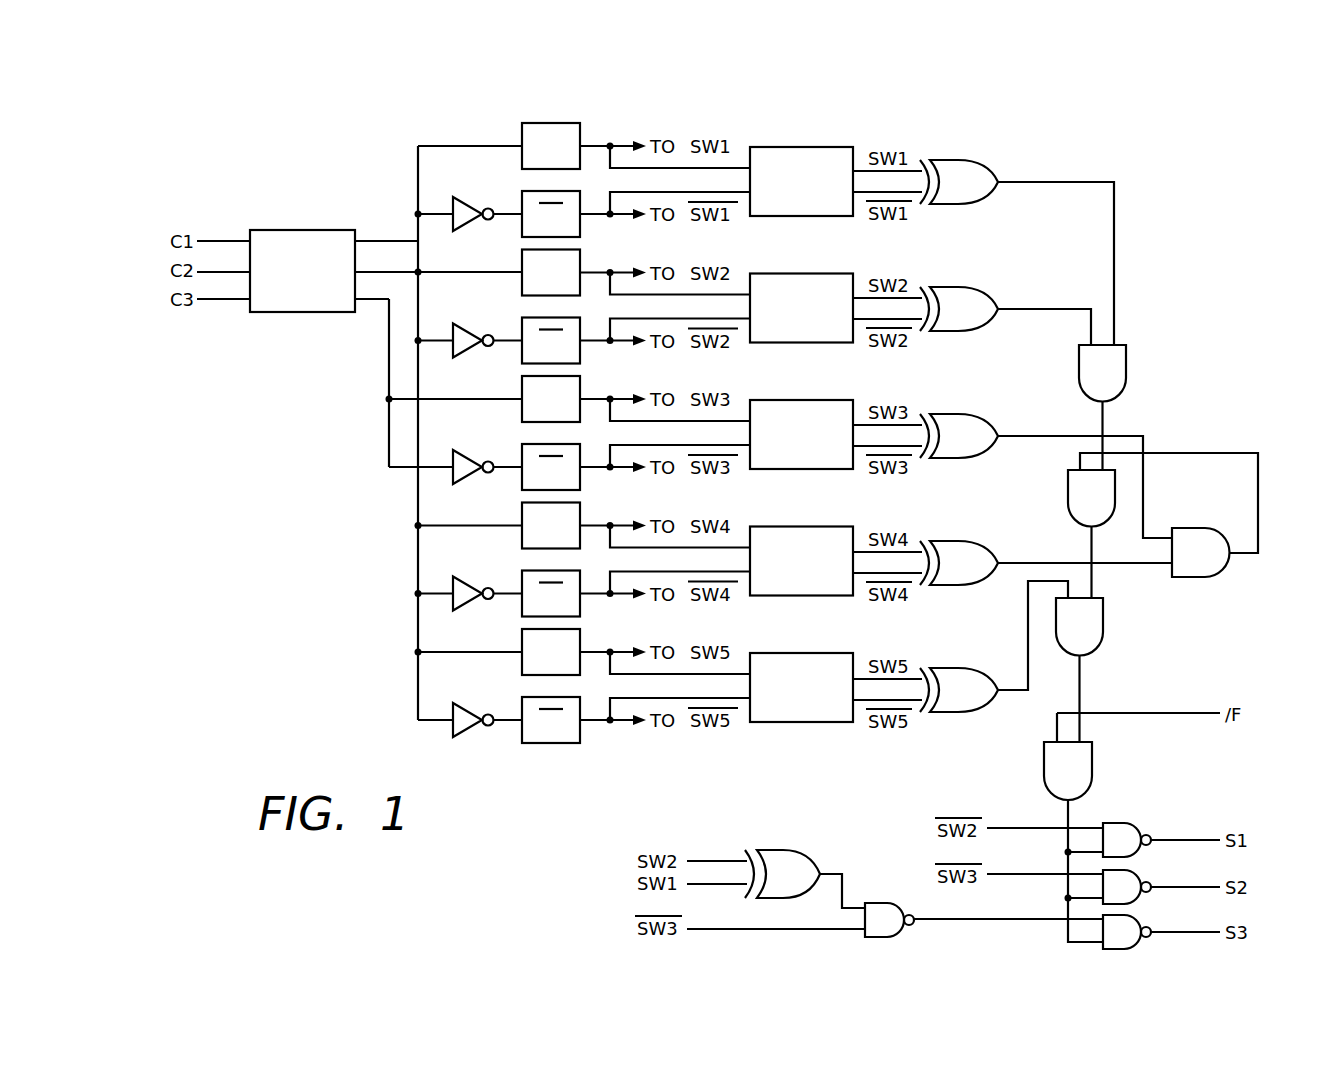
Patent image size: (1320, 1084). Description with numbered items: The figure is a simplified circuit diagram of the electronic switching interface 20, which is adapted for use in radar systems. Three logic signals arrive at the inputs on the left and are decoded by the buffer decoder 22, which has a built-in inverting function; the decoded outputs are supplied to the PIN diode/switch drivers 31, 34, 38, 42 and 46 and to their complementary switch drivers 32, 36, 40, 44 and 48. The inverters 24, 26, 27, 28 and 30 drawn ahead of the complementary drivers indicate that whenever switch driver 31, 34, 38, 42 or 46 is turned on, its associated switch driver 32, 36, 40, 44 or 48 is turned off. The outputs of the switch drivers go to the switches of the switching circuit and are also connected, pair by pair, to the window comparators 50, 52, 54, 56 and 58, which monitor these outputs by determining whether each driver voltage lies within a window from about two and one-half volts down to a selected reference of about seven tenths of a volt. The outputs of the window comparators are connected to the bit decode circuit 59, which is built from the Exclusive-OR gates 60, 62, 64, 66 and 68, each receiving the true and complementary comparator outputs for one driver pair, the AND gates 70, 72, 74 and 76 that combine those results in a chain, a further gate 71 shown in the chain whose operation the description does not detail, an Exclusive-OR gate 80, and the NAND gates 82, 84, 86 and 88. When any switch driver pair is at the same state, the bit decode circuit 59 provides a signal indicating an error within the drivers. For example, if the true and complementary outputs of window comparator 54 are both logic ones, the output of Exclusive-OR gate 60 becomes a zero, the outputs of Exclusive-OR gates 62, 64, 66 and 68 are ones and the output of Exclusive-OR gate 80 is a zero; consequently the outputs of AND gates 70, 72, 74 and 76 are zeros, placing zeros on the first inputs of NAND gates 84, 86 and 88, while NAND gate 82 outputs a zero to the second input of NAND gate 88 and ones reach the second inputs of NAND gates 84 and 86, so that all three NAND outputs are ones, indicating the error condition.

The electronic switching interface 20 is at (348, 174).
The buffer decoder 22 is at (290, 238).
The inverter 24 is at (462, 208).
The inverter 26 is at (462, 334).
The inverter 27 is at (462, 461).
The inverter 28 is at (462, 588).
The inverter 30 is at (462, 714).
The switch driver S1 31 is at (522, 131).
The switch driver /S1 32 is at (582, 232).
The switch driver S2 34 is at (522, 258).
The switch driver /S2 36 is at (582, 358).
The switch driver S3 38 is at (522, 384).
The switch driver /S3 40 is at (582, 485).
The switch driver S4 42 is at (522, 510).
The switch driver /S4 44 is at (582, 612).
The switch driver S5 46 is at (522, 637).
The switch driver /S5 48 is at (582, 738).
The window comparator 50 is at (830, 205).
The window comparator 52 is at (830, 332).
The window comparator 54 is at (830, 458).
The window comparator 56 is at (830, 584).
The window comparator 58 is at (830, 711).
The bit decode circuit 59 is at (1155, 262).
The Exclusive-OR gate 60 is at (973, 172).
The Exclusive-OR gate 62 is at (973, 299).
The Exclusive-OR gate 64 is at (973, 426).
The Exclusive-OR gate 66 is at (973, 553).
The Exclusive-OR gate 68 is at (973, 680).
The AND gate 70 is at (1118, 365).
The AND gate 71 is at (1198, 538).
The AND gate 72 is at (1073, 493).
The AND gate 74 is at (1097, 619).
The AND gate 76 is at (1052, 764).
The Exclusive-OR gate 80 is at (773, 860).
The NAND gate 82 is at (881, 910).
The NAND gate 84 is at (1128, 826).
The NAND gate 86 is at (1128, 873).
The NAND gate 88 is at (1128, 920).